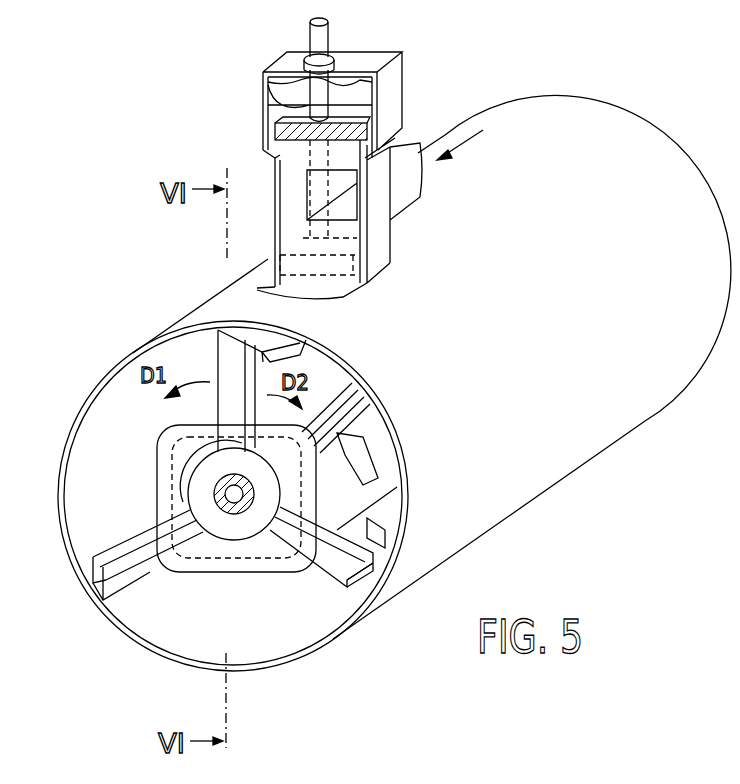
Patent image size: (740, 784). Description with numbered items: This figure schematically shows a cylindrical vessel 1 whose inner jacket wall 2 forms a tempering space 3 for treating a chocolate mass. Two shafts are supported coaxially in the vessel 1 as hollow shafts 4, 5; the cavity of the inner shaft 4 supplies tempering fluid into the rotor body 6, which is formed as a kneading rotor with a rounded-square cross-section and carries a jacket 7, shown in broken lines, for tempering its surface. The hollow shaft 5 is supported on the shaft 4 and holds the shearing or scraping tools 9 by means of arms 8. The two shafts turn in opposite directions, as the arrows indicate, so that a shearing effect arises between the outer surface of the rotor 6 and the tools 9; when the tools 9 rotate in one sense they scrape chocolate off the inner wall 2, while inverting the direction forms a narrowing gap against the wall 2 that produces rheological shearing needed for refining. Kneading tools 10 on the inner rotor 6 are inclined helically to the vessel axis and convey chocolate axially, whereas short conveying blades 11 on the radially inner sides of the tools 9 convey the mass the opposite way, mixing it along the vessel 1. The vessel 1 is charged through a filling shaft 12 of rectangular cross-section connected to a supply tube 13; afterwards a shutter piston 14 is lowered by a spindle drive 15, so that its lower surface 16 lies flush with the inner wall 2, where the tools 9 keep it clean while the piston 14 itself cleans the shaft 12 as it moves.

The cylindrical vessel 1 is at (540, 473).
The inner jacket wall 2 is at (267, 650).
The tempering space 3 is at (303, 650).
The inner hollow shaft 4 is at (225, 520).
The hollow shaft 5 is at (244, 540).
The rotor body 6 is at (157, 488).
The jacket 7 is at (175, 453).
The arms 8 is at (327, 557).
The shearing or scraping tools 9 is at (363, 577).
The kneading tools 10 is at (370, 437).
The conveying blades 11 is at (300, 347).
The filling shaft 12 is at (273, 228).
The supply tube 13 is at (407, 190).
The shutter piston 14 is at (295, 115).
The spindle drive 15 is at (334, 32).
The lower surface 16 is at (263, 157).